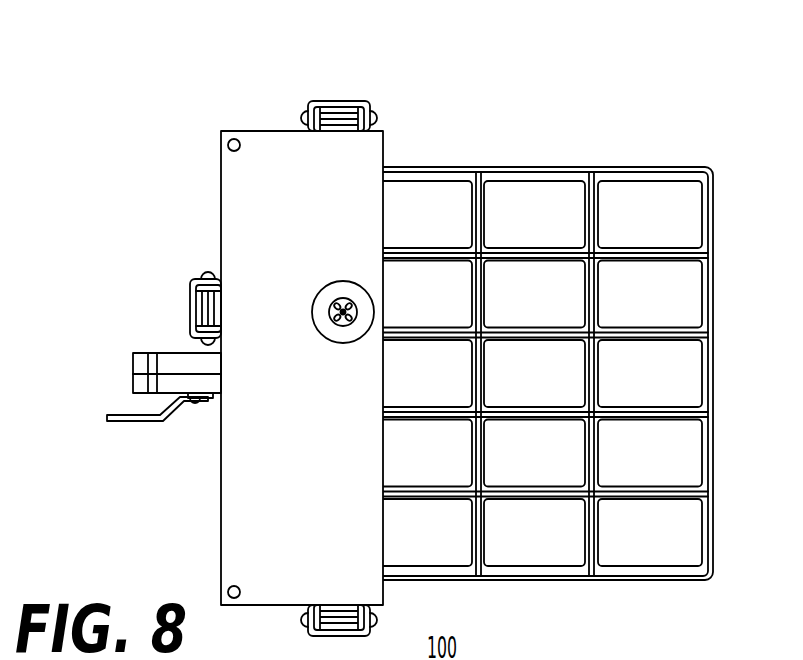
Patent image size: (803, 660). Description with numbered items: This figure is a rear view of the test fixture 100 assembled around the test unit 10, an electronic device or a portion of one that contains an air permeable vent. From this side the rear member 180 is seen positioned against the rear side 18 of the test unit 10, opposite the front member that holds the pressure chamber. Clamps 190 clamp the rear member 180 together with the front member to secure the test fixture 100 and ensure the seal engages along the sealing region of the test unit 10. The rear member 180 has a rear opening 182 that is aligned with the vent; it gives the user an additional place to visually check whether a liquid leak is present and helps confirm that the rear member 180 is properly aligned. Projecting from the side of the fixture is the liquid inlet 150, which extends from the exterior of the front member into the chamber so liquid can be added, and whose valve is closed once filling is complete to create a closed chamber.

The test fixture 100 is at (160, 95).
The test unit 10 is at (502, 197).
The rear side 18 is at (412, 192).
The rear member 180 is at (270, 155).
The rear opening 182 is at (330, 303).
The clamps 190 is at (342, 112).
The liquid inlet 150 is at (178, 382).